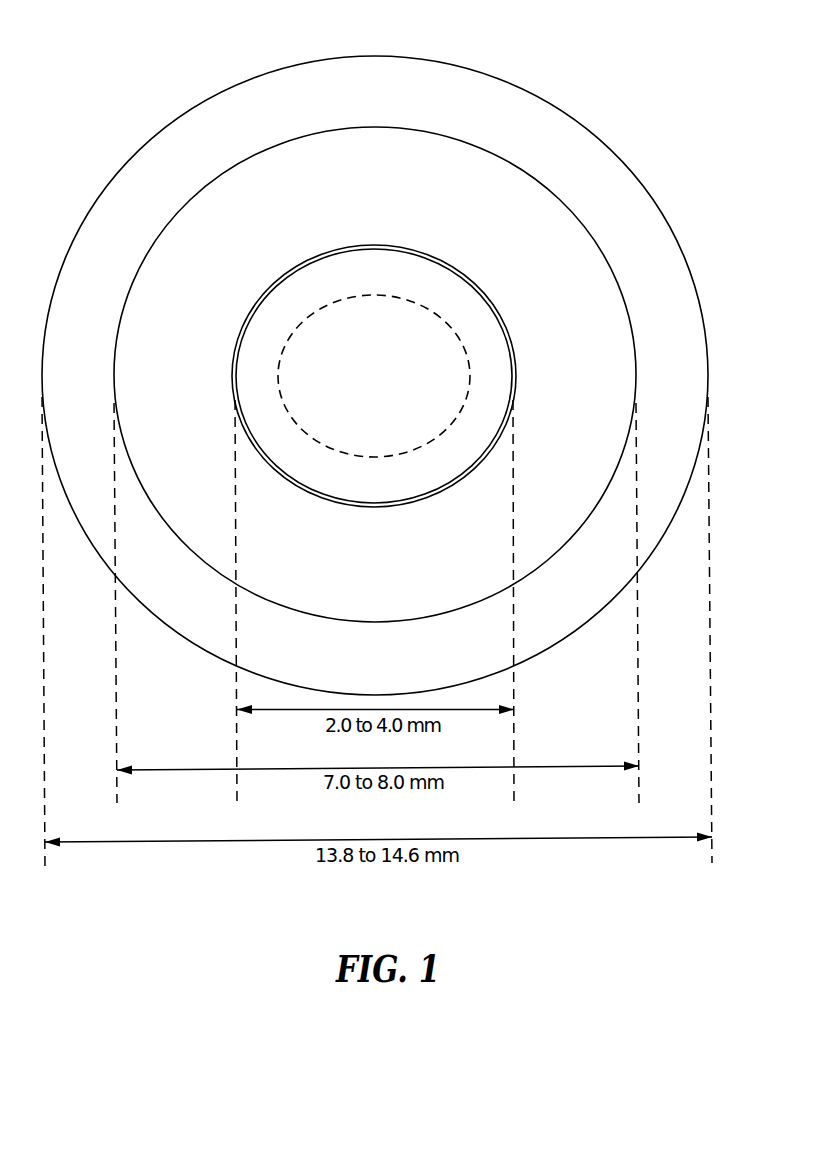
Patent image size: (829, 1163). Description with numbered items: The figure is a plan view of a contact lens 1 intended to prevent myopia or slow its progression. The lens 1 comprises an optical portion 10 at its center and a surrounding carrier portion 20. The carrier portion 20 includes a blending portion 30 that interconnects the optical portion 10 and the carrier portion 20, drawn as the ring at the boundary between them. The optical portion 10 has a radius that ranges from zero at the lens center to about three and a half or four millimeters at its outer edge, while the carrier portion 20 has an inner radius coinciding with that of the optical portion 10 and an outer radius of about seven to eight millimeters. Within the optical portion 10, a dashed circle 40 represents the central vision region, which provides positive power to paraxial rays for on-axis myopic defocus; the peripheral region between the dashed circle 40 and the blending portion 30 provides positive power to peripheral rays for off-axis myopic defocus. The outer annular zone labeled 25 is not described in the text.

The contact lens 1 is at (623, 62).
The optical portion 10 is at (385, 375).
The carrier portion 20 is at (385, 200).
The peripheral zone 25 is at (443, 80).
The blending portion 30 is at (418, 245).
The dashed circle 40 is at (337, 297).